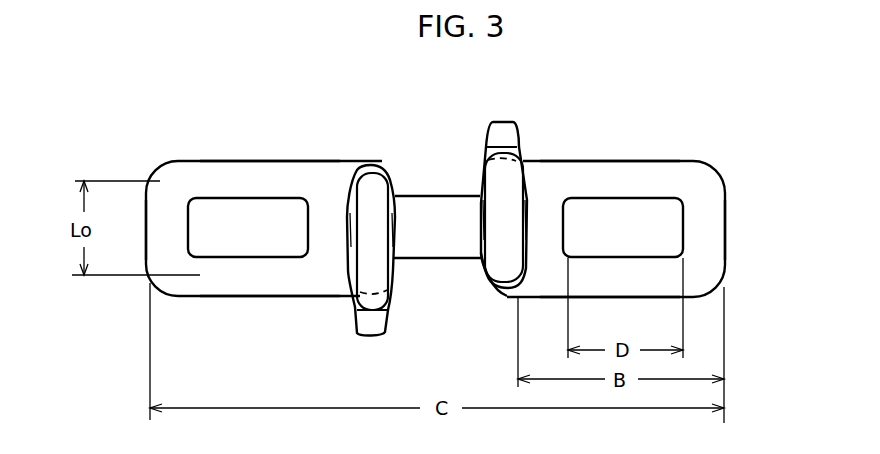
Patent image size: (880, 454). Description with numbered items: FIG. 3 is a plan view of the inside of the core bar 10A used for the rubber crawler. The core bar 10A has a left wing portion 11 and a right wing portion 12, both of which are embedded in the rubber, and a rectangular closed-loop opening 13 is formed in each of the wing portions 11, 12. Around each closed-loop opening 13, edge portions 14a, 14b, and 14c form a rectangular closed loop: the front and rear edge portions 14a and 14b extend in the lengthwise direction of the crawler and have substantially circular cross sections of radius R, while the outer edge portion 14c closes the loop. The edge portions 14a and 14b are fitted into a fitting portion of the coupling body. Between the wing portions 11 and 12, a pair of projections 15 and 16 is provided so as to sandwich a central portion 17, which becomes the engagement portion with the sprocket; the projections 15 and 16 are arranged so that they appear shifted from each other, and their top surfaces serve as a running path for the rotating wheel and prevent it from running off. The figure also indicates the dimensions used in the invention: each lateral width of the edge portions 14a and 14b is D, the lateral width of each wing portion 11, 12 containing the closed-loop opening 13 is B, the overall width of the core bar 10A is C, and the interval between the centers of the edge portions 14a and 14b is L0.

The core bar 10A is at (452, 219).
The left wing portion 11 is at (203, 298).
The right wing portion 12 is at (732, 172).
The closed-loop opening 13 is at (203, 255).
The edge portion 14a is at (262, 285).
The edge portion 14b is at (284, 170).
The edge portion 14c is at (162, 230).
The projection 15 is at (373, 325).
The projection 16 is at (512, 133).
The central portion 17 is at (437, 208).